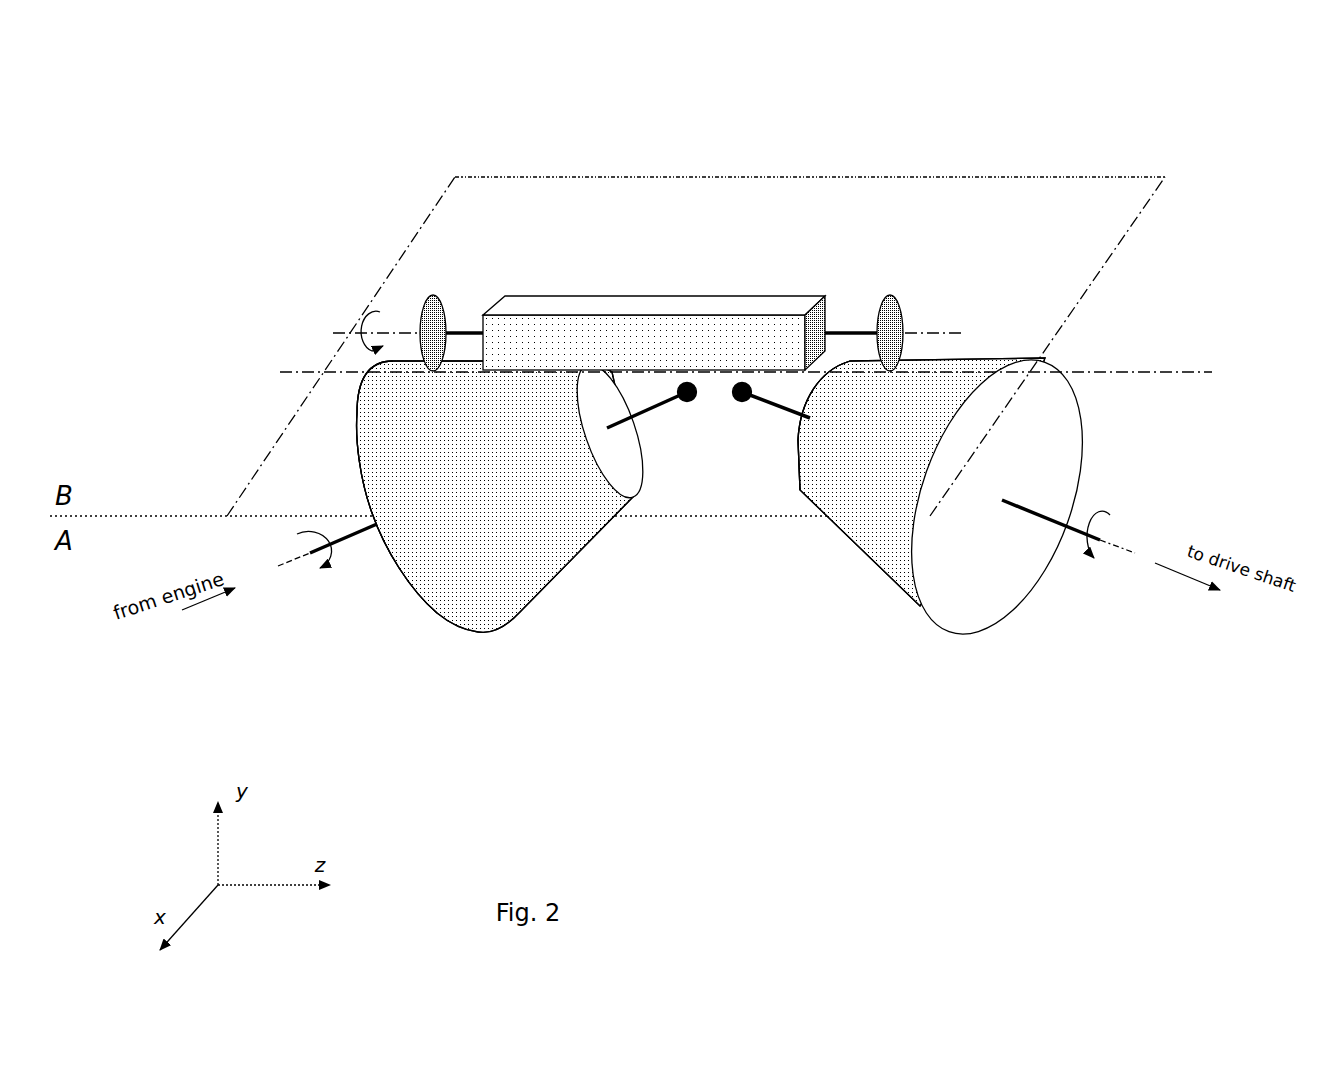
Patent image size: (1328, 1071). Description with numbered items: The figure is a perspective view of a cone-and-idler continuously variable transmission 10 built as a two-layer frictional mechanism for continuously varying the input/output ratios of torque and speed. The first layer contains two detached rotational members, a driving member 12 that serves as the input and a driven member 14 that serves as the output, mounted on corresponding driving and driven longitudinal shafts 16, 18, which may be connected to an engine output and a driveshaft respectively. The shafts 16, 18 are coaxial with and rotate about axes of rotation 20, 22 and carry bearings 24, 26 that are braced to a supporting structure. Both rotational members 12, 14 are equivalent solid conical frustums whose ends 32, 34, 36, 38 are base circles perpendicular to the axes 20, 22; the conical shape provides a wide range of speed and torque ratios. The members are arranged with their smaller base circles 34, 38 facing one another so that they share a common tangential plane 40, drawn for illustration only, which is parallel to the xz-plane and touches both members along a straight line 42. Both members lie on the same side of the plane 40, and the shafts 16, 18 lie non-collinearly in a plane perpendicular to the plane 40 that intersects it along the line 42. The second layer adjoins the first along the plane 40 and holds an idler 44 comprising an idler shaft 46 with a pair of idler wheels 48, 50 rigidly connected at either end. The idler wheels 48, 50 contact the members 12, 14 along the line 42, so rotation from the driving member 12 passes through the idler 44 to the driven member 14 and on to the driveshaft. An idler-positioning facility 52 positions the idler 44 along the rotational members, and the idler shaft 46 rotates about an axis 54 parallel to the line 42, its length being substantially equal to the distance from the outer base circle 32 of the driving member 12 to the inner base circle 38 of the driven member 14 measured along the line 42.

The continuously variable transmission 10 is at (175, 118).
The driving member 12 is at (535, 622).
The driven member 14 is at (887, 608).
The driving shaft 16 is at (341, 546).
The driven shaft 18 is at (1082, 525).
The axis of rotation 20 is at (280, 566).
The axis of rotation 22 is at (1120, 550).
The bearing 24 is at (688, 405).
The bearing 26 is at (737, 404).
The outer base circle 32 is at (402, 586).
The smaller base circle 34 is at (618, 465).
The base circle 36 is at (984, 610).
The inner base circle 38 is at (796, 438).
The common tangential plane 40 is at (1100, 232).
The straight line 42 is at (1188, 373).
The idler 44 is at (792, 225).
The idler shaft 46 is at (461, 331).
The idler wheel 48 is at (433, 295).
The idler wheel 50 is at (891, 298).
The idler-positioning facility 52 is at (552, 303).
The axis 54 is at (337, 333).